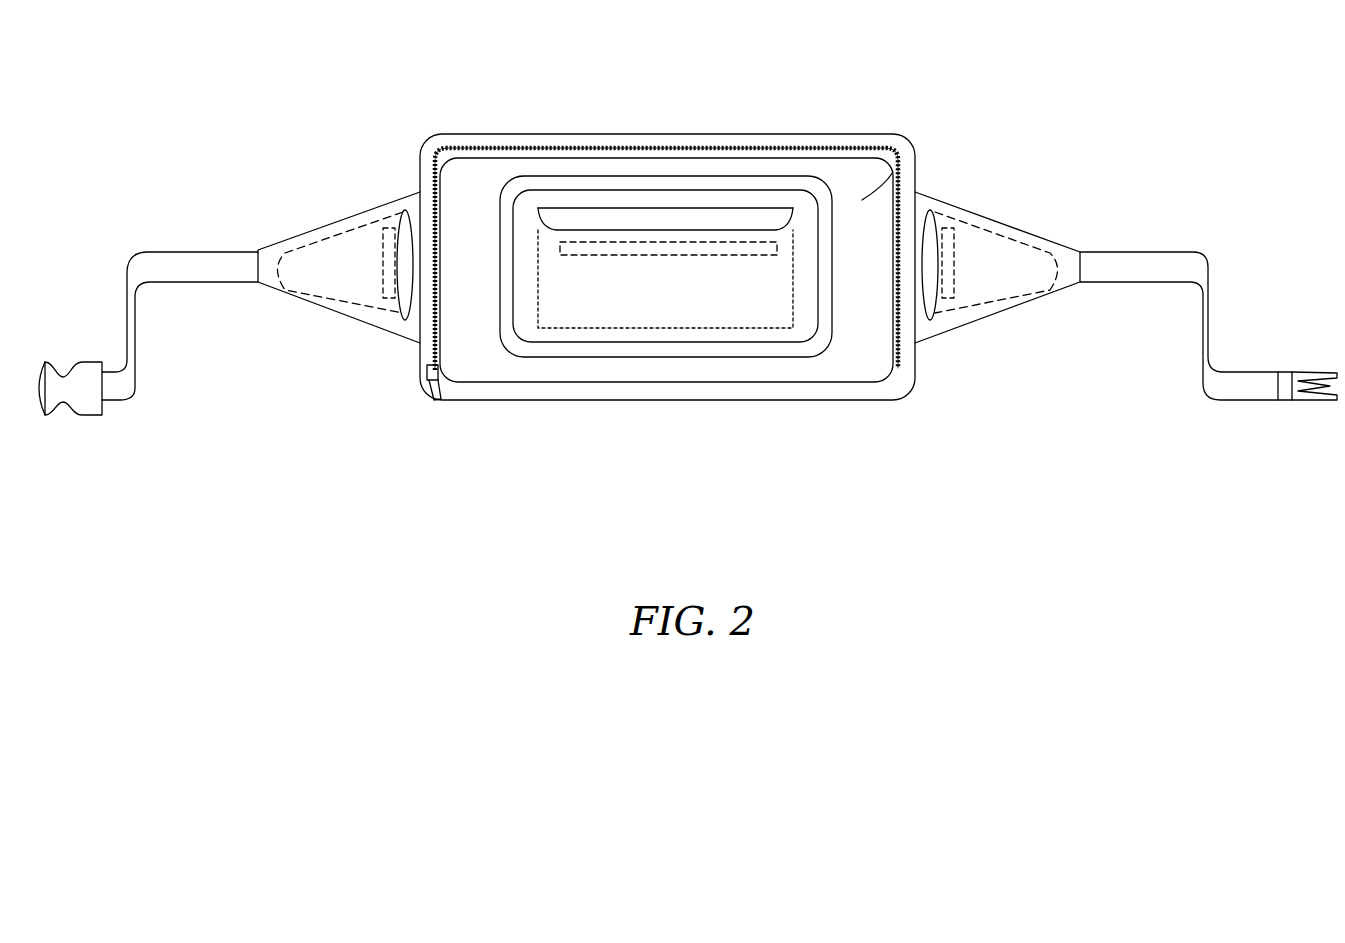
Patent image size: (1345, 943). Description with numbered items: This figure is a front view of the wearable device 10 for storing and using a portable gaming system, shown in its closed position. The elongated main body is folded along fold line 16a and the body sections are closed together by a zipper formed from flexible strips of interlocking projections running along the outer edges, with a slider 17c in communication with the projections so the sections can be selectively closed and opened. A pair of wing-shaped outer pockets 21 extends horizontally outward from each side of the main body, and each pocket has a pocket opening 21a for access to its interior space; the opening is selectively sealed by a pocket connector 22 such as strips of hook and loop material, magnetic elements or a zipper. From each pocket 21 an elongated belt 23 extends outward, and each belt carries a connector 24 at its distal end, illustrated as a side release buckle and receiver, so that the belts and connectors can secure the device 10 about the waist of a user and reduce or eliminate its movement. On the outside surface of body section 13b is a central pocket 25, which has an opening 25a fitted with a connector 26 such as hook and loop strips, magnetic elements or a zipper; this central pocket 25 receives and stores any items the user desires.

The device 10 is at (277, 95).
The body section 13b is at (902, 162).
The fold line 16a is at (673, 392).
The slider 17c is at (420, 372).
The wing-shaped outer pockets 21 is at (351, 276).
The pocket opening 21a is at (397, 302).
The pocket connector 22 is at (378, 222).
The belts 23 is at (190, 262).
The connector 24 is at (63, 377).
The central pocket 25 is at (681, 310).
The opening 25a is at (746, 212).
The connector 26 is at (560, 248).